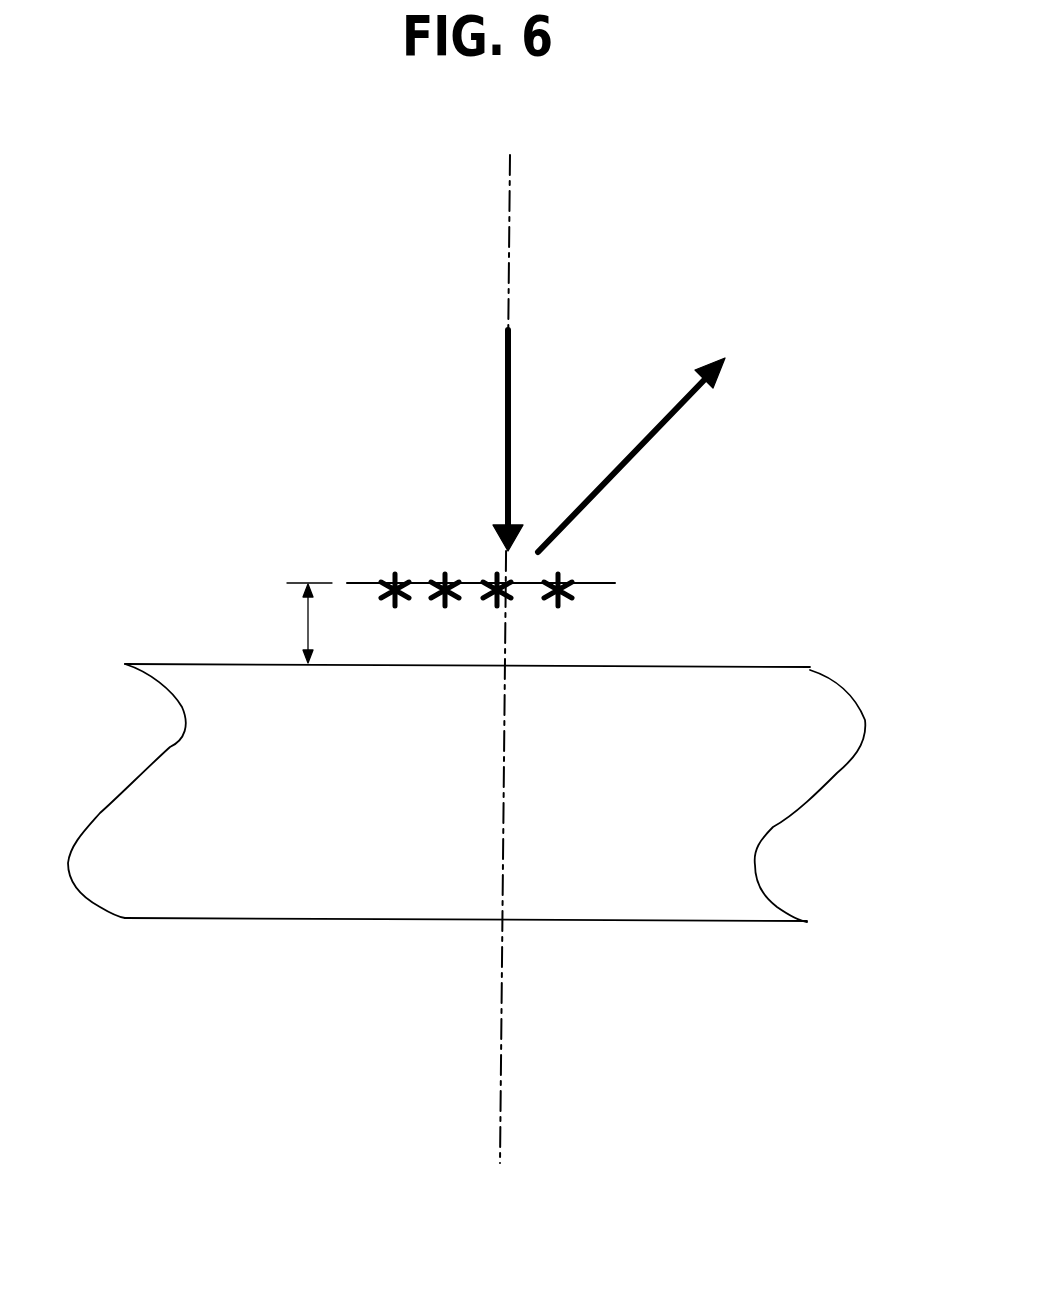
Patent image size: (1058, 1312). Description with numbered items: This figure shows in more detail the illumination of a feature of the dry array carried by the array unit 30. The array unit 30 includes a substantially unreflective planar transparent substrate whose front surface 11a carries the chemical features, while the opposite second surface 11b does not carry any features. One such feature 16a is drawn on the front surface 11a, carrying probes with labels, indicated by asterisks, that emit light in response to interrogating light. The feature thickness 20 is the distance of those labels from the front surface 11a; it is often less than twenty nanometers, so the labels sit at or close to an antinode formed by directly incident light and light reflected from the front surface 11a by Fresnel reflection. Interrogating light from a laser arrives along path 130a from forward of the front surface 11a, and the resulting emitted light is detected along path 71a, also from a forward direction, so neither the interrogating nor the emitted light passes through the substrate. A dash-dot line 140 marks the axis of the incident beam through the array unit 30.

The optical axis (center line) 140 is at (487, 290).
The path 130a is at (507, 380).
The path 71a is at (700, 407).
The feature 16a is at (600, 573).
The feature thickness 20 is at (303, 622).
The front surface 11a is at (725, 665).
The second surface 11b is at (553, 922).
The array unit 30 is at (292, 975).